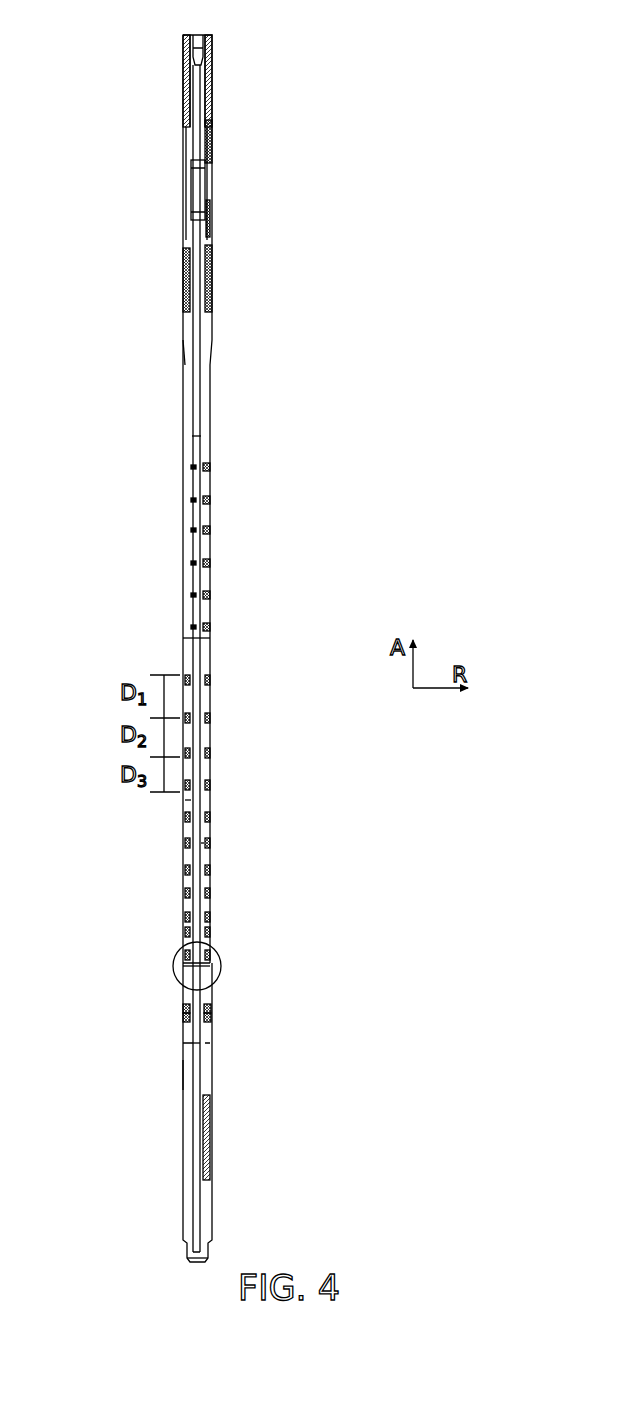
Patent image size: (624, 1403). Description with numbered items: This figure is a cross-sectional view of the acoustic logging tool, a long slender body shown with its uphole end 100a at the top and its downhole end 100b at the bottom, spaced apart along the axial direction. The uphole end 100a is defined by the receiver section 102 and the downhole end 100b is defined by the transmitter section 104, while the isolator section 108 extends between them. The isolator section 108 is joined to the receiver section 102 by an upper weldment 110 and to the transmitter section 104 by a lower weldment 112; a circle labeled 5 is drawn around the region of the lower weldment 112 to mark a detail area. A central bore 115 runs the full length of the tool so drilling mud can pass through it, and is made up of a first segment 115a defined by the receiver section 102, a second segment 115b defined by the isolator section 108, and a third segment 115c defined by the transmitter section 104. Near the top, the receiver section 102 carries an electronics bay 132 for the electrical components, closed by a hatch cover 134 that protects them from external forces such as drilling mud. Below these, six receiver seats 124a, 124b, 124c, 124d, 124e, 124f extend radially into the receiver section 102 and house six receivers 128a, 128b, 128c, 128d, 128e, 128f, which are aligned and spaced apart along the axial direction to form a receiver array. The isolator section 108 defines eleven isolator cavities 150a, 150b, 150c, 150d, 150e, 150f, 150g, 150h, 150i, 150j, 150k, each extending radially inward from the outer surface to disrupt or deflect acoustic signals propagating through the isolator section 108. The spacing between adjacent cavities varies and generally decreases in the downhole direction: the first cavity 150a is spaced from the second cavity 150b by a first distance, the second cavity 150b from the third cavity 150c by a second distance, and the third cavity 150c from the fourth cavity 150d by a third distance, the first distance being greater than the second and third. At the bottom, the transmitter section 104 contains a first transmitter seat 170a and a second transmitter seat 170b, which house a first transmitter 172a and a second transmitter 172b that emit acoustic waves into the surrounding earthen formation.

The uphole end 100a is at (182, 208).
The downhole end 100b is at (178, 1064).
The receiver section 102 is at (213, 404).
The transmitter section 104 is at (214, 1043).
The isolator section 108 is at (212, 843).
The upper weldment 110 is at (211, 638).
The lower weldment 112 is at (218, 967).
The central bore 115 is at (208, 350).
The first segment 115a is at (190, 440).
The second segment 115b is at (184, 801).
The third segment 115c is at (186, 1044).
The first receiver seat 124a is at (212, 467).
The second receiver seat 124b is at (212, 500).
The third receiver seat 124c is at (212, 530).
The fourth receiver seat 124d is at (212, 563).
The fifth receiver seat 124e is at (212, 595).
The sixth receiver seat 124f is at (212, 627).
The first receiver 128a is at (195, 467).
The second receiver 128b is at (195, 500).
The third receiver 128c is at (195, 530).
The fourth receiver 128d is at (195, 563).
The fifth receiver 128e is at (195, 595).
The sixth receiver 128f is at (195, 627).
The electronics bay 132 is at (215, 270).
The hatch cover 134 is at (183, 283).
The first cavity 150a is at (212, 680).
The second cavity 150b is at (212, 718).
The third cavity 150c is at (212, 753).
The fourth cavity 150d is at (212, 785).
The fifth cavity 150e is at (212, 817).
The sixth cavity 150f is at (184, 843).
The seventh cavity 150g is at (212, 870).
The eighth cavity 150h is at (212, 893).
The ninth cavity 150i is at (184, 917).
The tenth cavity 150j is at (184, 932).
The eleventh cavity 150k is at (184, 955).
The first transmitter seat 170a is at (212, 1008).
The second transmitter seat 170b is at (181, 1008).
The first transmitter 172a is at (212, 1016).
The second transmitter 172b is at (181, 1017).
The detail view circle 5 is at (220, 958).